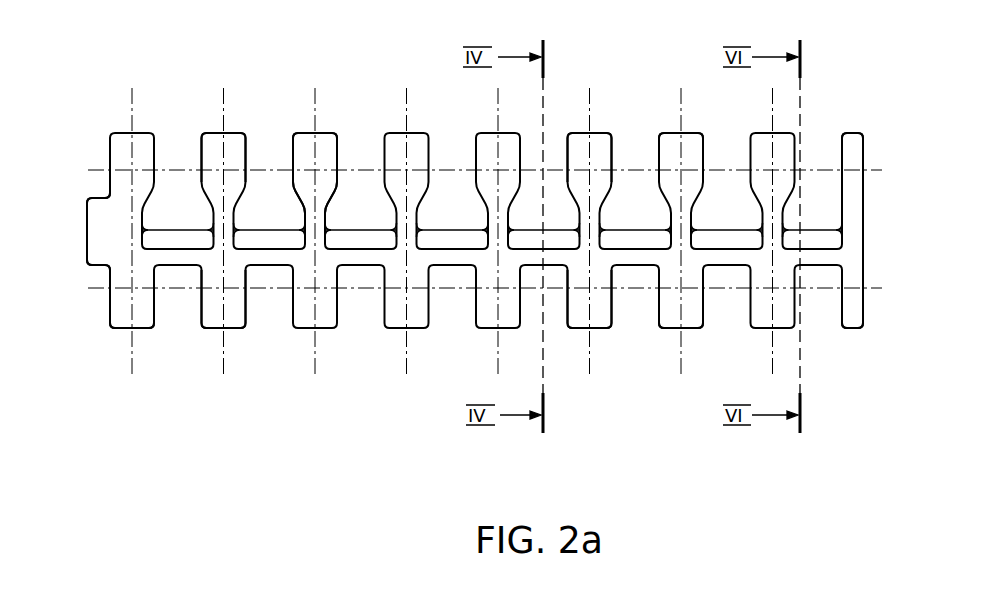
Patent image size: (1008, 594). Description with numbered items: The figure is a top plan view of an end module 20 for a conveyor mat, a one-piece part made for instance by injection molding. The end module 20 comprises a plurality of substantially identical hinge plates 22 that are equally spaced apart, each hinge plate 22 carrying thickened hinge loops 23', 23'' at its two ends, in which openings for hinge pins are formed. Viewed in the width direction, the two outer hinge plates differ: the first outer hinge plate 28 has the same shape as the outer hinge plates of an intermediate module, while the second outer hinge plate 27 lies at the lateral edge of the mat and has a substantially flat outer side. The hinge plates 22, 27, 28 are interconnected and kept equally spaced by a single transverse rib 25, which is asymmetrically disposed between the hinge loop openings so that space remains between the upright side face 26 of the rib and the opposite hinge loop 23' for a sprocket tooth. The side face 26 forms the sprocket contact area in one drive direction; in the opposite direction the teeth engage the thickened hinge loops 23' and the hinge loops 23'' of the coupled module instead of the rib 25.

The end module 20 is at (383, 412).
The hinge plate 22 is at (318, 218).
The hinge loop 23' is at (453, 105).
The hinge loop 23'' is at (406, 331).
The transverse rib 25 is at (268, 258).
The side face of rib 26 is at (165, 238).
The second outer hinge plate 27 is at (853, 313).
The first outer hinge plate 28 is at (95, 243).